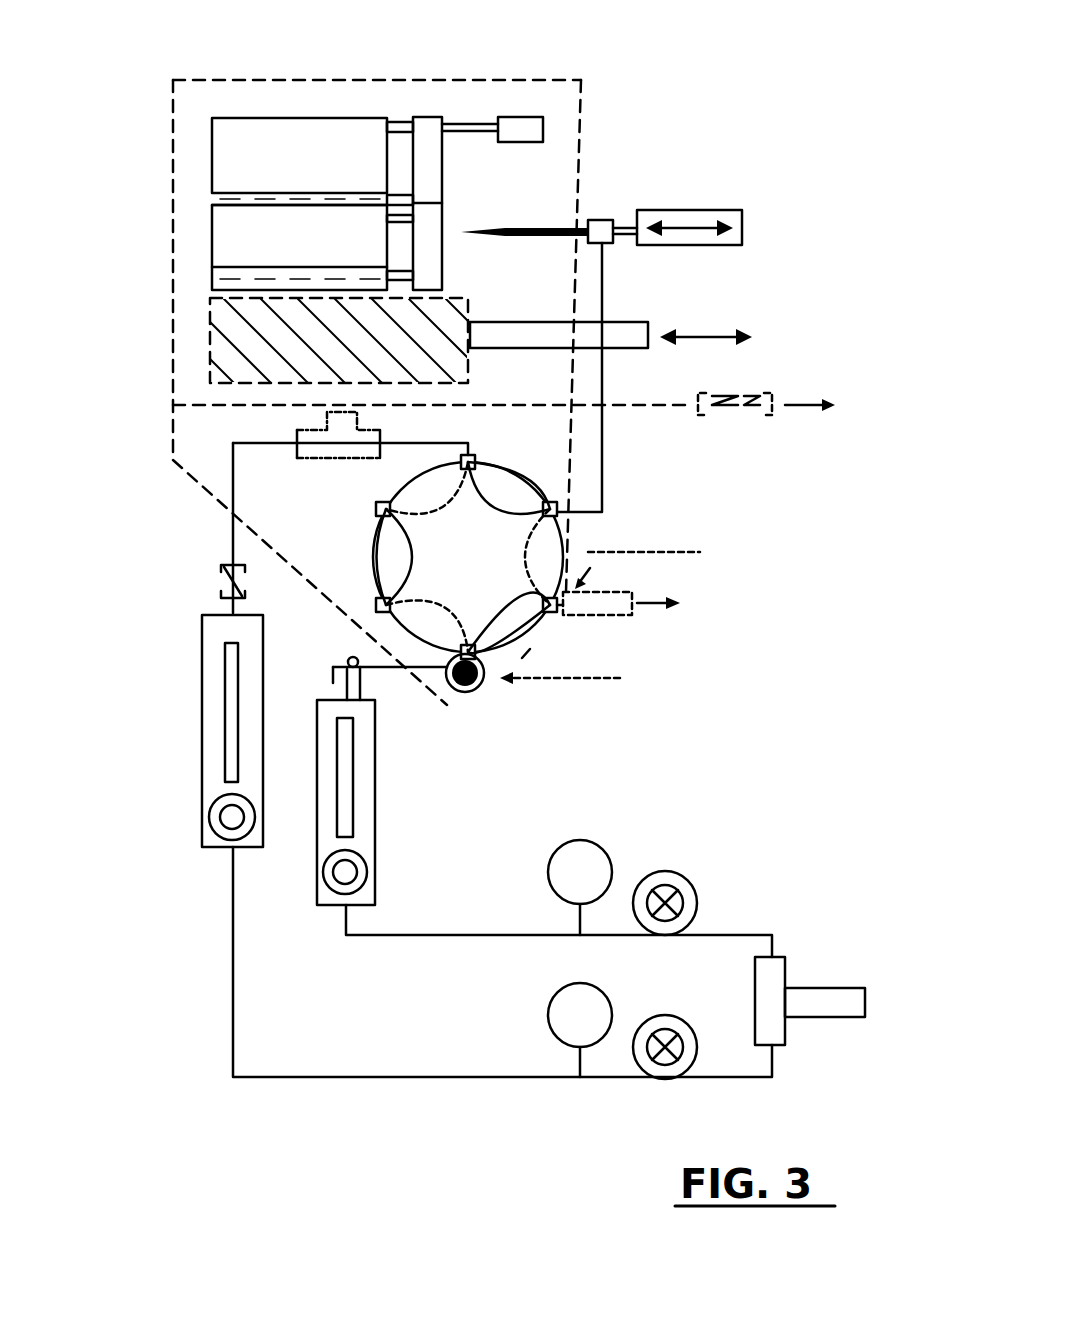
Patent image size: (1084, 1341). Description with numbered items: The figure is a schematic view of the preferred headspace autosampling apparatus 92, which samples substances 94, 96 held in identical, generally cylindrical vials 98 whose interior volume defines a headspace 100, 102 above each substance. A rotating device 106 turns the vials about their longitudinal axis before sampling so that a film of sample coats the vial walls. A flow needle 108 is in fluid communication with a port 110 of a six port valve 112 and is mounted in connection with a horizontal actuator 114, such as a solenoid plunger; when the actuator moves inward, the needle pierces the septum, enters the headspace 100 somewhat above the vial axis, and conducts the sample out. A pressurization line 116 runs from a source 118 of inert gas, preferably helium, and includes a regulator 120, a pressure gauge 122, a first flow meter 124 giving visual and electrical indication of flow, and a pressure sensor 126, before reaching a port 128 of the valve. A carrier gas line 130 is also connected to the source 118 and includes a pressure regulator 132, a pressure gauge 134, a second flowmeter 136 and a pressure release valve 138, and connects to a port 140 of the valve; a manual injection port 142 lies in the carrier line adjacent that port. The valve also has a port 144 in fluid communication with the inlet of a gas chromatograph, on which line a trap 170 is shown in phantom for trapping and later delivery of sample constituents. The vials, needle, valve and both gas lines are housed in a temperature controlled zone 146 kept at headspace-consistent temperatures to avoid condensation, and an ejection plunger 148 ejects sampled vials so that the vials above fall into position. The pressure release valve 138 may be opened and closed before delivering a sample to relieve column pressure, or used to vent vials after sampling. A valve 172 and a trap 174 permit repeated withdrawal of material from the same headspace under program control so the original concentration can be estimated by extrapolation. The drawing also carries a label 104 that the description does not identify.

The headspace autosampling apparatus 92 is at (815, 850).
The substance 94 is at (260, 247).
The substance 96 is at (260, 163).
The vial 98 is at (212, 138).
The headspace 100 is at (326, 249).
The headspace 102 is at (326, 164).
The plunger drive plate 104 is at (422, 188).
The rotating device 106 is at (528, 117).
The flow needle 108 is at (557, 227).
The port 110 is at (557, 500).
The six port valve 112 is at (362, 540).
The horizontal actuator 114 is at (720, 210).
The pressurization line 116 is at (490, 1080).
The source of inert gas 118 is at (787, 1037).
The regulator 120 is at (662, 1080).
The pressure gauge 122 is at (582, 983).
The first flow meter 124 is at (212, 847).
The pressure sensor 126 is at (233, 563).
The port 128 is at (473, 455).
The carrier gas line 130 is at (395, 940).
The pressure regulator 132 is at (678, 872).
The pressure gauge 134 is at (582, 840).
The second flowmeter 136 is at (377, 815).
The pressure release valve 138 is at (356, 658).
The port 140 is at (482, 658).
The manual injection port 142 is at (465, 693).
The port 144 is at (553, 617).
The temperature controlled zone 146 is at (582, 110).
The ejection plunger 148 is at (513, 322).
The trap 170 is at (632, 607).
The valve 172 is at (297, 437).
The trap 174 is at (720, 417).